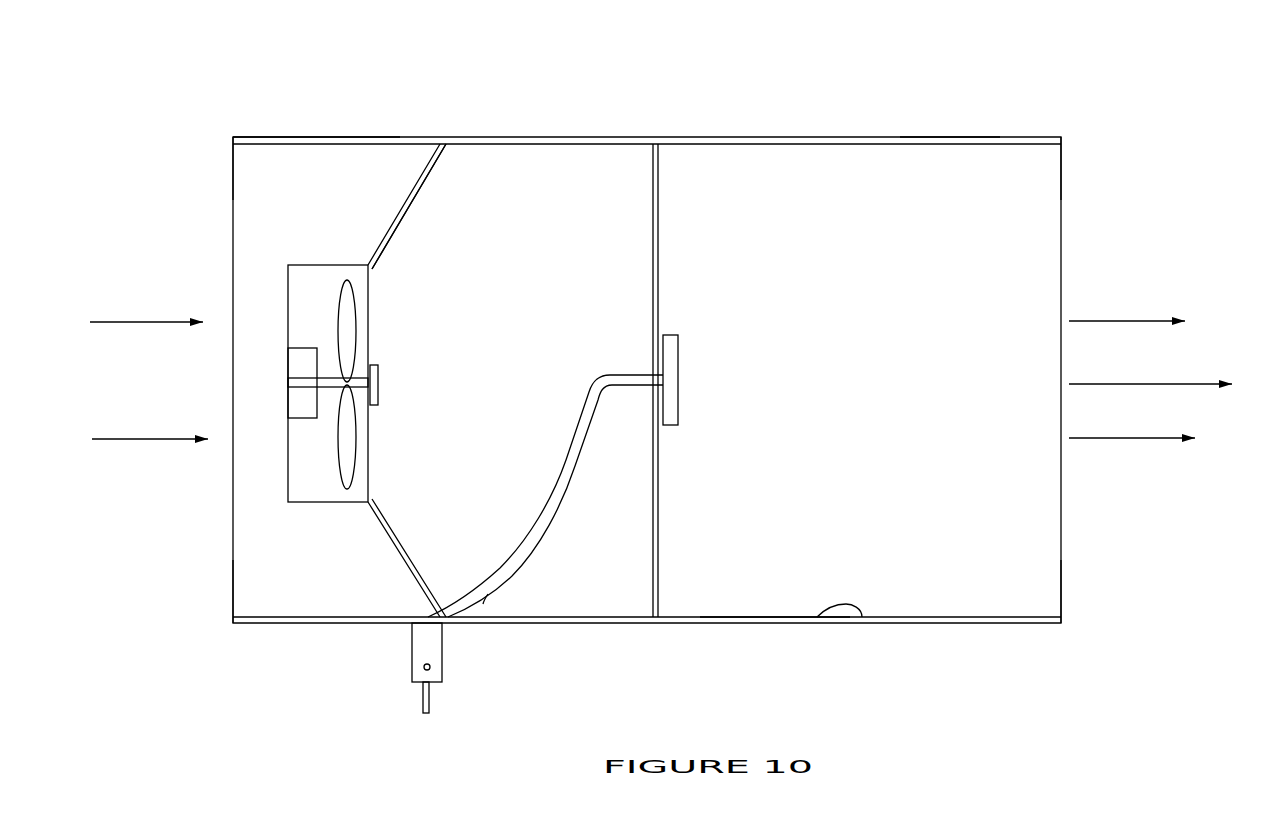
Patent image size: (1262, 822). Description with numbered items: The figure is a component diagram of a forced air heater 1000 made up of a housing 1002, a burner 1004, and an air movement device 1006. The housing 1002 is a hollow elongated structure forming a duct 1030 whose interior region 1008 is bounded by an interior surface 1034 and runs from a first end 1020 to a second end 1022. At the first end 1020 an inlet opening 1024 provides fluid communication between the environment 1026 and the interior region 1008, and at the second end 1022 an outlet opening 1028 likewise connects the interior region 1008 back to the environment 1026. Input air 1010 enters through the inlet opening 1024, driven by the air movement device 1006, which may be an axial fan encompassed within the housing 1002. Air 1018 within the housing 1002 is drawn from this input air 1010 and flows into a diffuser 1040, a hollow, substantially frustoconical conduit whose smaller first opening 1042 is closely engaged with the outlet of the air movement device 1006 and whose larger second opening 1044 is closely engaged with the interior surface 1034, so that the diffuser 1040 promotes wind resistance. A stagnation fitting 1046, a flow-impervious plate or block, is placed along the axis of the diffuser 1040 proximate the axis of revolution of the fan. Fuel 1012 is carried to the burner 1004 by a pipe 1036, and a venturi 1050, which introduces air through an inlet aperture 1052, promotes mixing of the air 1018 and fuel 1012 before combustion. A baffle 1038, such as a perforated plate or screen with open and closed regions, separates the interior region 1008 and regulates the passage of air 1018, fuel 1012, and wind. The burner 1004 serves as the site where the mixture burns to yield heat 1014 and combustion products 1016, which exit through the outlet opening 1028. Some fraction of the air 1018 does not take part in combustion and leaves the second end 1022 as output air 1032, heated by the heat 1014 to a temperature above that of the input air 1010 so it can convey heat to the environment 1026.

The forced air heater 1000 is at (259, 127).
The housing 1002 is at (338, 137).
The burner 1004 is at (676, 345).
The air movement device 1006 is at (280, 470).
The interior region 1008 is at (931, 159).
The input air 1010 is at (112, 322).
The fuel 1012 is at (568, 486).
The heat 1014 is at (1155, 321).
The combustion products 1016 is at (1152, 439).
The air 1018 is at (575, 231).
The first end 1020 is at (222, 612).
The second end 1022 is at (1064, 601).
The inlet opening 1024 is at (223, 177).
The environment 1026 is at (1174, 51).
The outlet opening 1028 is at (1066, 165).
The duct 1030 is at (782, 627).
The output air 1032 is at (1158, 384).
The interior surface 1034 is at (862, 617).
The pipe 1036 is at (483, 604).
The baffle 1038 is at (651, 165).
The diffuser 1040 is at (427, 168).
The first opening 1042 is at (361, 491).
The second opening 1044 is at (453, 184).
The stagnation fitting 1046 is at (384, 390).
The venturi 1050 is at (441, 688).
The inlet aperture 1052 is at (422, 668).